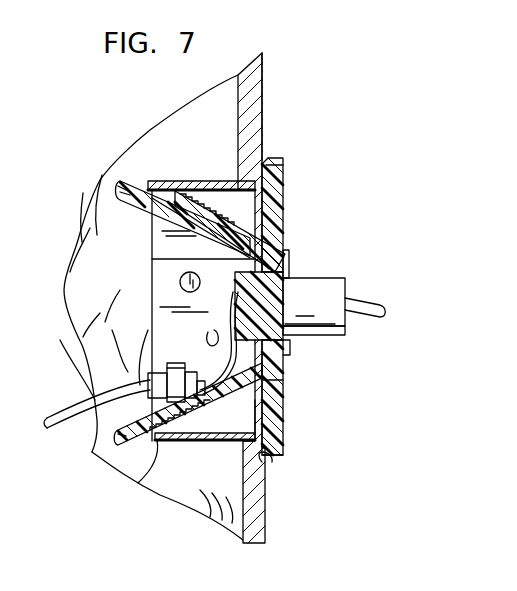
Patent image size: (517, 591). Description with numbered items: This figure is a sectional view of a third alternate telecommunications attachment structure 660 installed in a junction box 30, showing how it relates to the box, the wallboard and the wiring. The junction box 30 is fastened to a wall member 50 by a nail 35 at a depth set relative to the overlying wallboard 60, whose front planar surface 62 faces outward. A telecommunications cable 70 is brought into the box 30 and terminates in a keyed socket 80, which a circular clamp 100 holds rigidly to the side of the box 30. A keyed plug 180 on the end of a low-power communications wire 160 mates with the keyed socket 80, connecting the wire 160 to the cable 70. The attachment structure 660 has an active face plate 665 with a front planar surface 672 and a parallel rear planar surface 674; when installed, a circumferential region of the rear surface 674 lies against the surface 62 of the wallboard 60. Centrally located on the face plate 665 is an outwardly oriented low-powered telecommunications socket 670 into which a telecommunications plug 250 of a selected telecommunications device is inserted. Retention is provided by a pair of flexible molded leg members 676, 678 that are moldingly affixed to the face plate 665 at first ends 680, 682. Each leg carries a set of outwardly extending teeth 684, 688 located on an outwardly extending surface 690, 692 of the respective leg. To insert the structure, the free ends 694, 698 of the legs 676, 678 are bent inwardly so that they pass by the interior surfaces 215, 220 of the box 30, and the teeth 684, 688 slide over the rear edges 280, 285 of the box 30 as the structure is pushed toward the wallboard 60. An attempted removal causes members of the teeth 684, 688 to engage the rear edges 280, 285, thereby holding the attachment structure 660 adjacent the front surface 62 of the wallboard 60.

The wall member 50 is at (205, 117).
The wallboard 60 is at (257, 84).
The front planar surface 62 is at (263, 108).
The junction box 30 is at (158, 228).
The nail 35 is at (180, 282).
The interior surface 215 is at (221, 191).
The interior surface 220 is at (223, 441).
The rear edge 280 is at (157, 183).
The teeth 684 is at (196, 215).
The flexible molded leg member 676 is at (207, 223).
The end of leg 694 is at (118, 192).
The rear edge 285 is at (167, 490).
The flexible molded leg member 678 is at (152, 441).
The teeth 688 is at (190, 441).
The end of leg 698 is at (100, 455).
The telecommunications attachment structure 660 is at (310, 315).
The active face plate 665 is at (285, 186).
The outwardly extending surface 690 is at (284, 203).
The first end of leg 680 is at (285, 223).
The low-powered telecommunications socket 670 is at (288, 262).
The telecommunications plug 250 is at (314, 283).
The first end of leg 682 is at (278, 383).
The outwardly extending surface 692 is at (258, 390).
The front planar surface 672 is at (285, 422).
The rear planar surface 674 is at (266, 466).
The low-power communications wire 160 is at (217, 350).
The circular clamp 100 is at (155, 373).
The keyed socket 80 is at (152, 380).
The keyed plug 180 is at (202, 383).
The telecommunications cable 70 is at (72, 392).